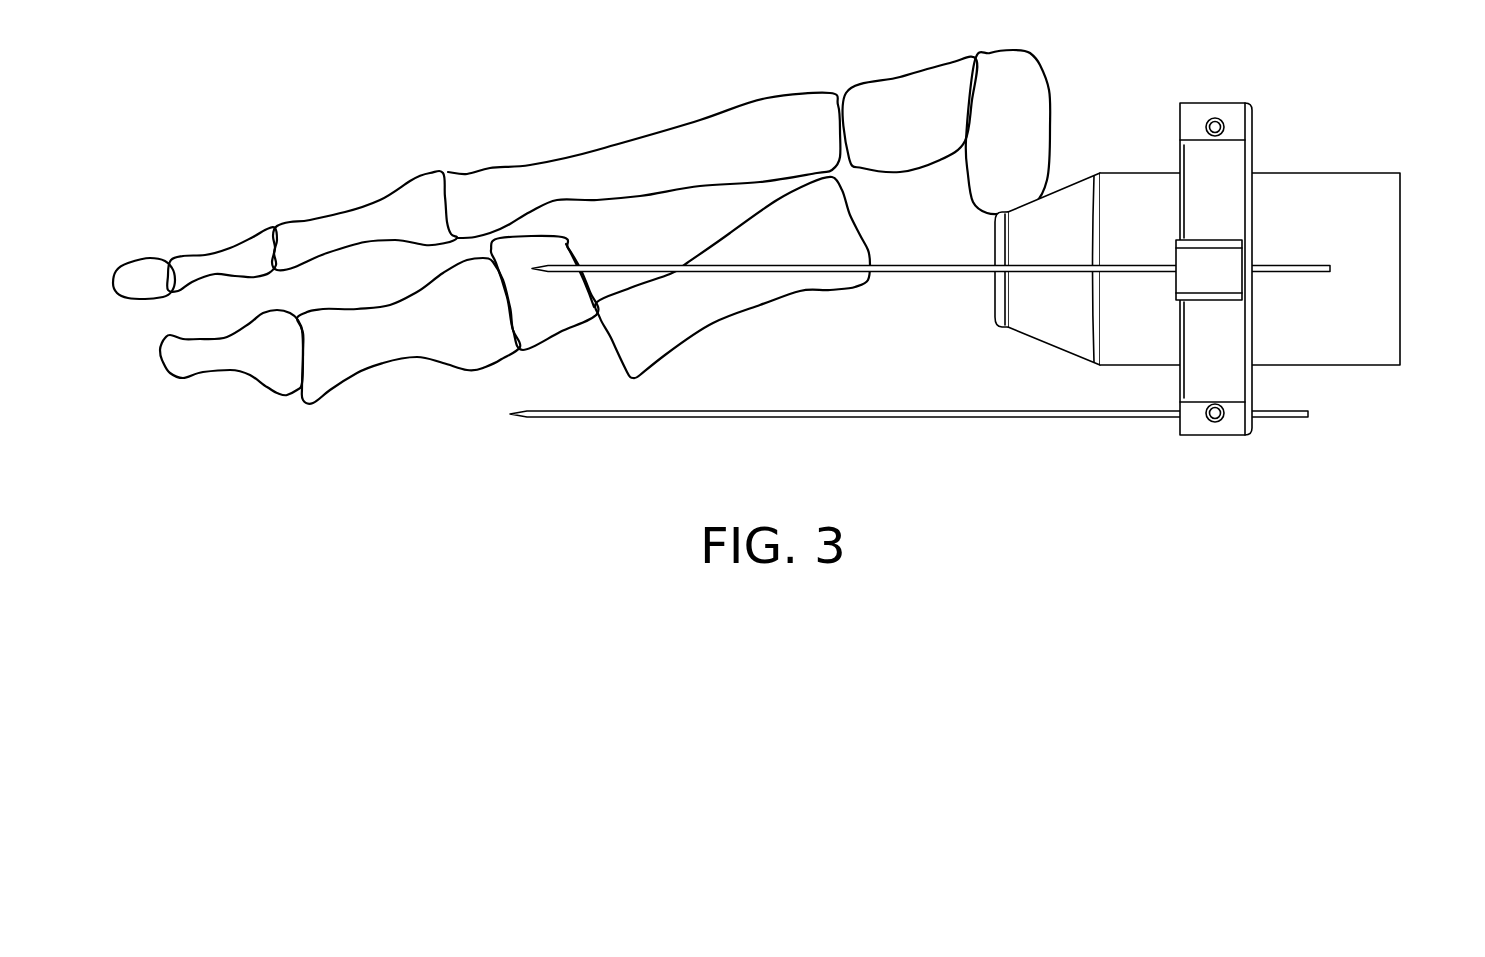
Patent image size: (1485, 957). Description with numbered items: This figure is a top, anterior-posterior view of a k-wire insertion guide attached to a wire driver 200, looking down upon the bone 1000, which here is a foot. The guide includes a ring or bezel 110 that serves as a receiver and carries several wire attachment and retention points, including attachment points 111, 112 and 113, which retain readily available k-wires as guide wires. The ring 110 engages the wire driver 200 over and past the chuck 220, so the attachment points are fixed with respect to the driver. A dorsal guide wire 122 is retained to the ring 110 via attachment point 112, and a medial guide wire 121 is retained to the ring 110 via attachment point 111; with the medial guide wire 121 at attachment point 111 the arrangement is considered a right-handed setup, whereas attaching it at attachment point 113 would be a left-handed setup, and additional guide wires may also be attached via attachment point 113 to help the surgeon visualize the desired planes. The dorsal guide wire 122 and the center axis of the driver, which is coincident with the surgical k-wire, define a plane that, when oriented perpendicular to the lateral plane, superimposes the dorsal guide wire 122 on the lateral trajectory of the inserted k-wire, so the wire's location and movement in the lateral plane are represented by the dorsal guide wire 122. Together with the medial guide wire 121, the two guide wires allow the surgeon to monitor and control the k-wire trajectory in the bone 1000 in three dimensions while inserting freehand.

The bone 1000 is at (532, 167).
The dorsal guide wire 122 is at (625, 265).
The medial guide wire 121 is at (637, 413).
The chuck 220 is at (1077, 203).
The wire driver 200 is at (1320, 173).
The ring 110 is at (1306, 267).
The wire attachment point 113 is at (1213, 107).
The wire attachment point 112 is at (1230, 285).
The wire attachment point 111 is at (1220, 435).